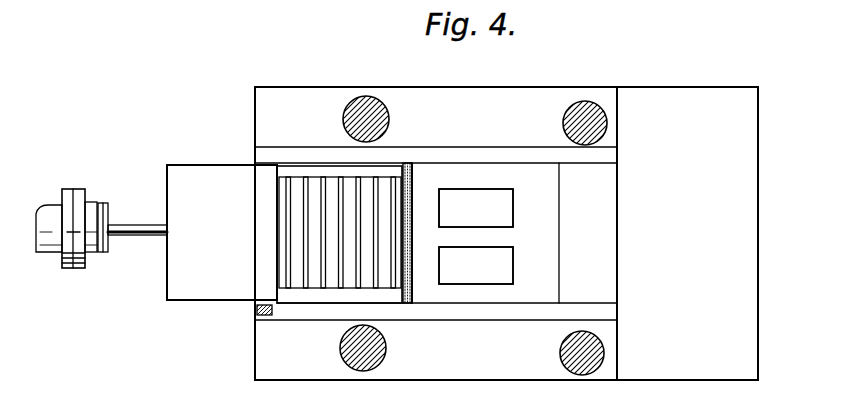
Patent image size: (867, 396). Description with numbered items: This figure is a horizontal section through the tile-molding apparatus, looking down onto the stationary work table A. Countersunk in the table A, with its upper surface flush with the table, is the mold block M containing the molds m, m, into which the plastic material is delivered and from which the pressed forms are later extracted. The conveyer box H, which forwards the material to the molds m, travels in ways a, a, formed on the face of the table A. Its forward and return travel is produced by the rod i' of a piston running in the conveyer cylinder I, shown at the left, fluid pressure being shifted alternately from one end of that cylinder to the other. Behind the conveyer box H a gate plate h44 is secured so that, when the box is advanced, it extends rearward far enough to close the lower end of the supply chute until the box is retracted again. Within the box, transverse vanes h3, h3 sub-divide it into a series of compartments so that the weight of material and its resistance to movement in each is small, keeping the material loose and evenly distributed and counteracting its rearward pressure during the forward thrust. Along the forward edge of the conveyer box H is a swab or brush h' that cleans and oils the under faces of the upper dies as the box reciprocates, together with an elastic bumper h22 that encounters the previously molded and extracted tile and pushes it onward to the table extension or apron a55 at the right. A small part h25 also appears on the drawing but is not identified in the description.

The conveyer cylinder I is at (72, 226).
The rod i' is at (137, 219).
The gate plate h44 is at (222, 232).
The stop block h25 is at (262, 311).
The conveyer box H is at (389, 178).
The transverse vanes h3 is at (318, 183).
The elastic bumper h22 is at (419, 207).
The swab or brush h' is at (424, 233).
The ways a is at (436, 234).
The stationary work table A is at (506, 233).
The table extension or apron a55 is at (687, 233).
The mold block M is at (488, 236).
The molds m is at (476, 236).